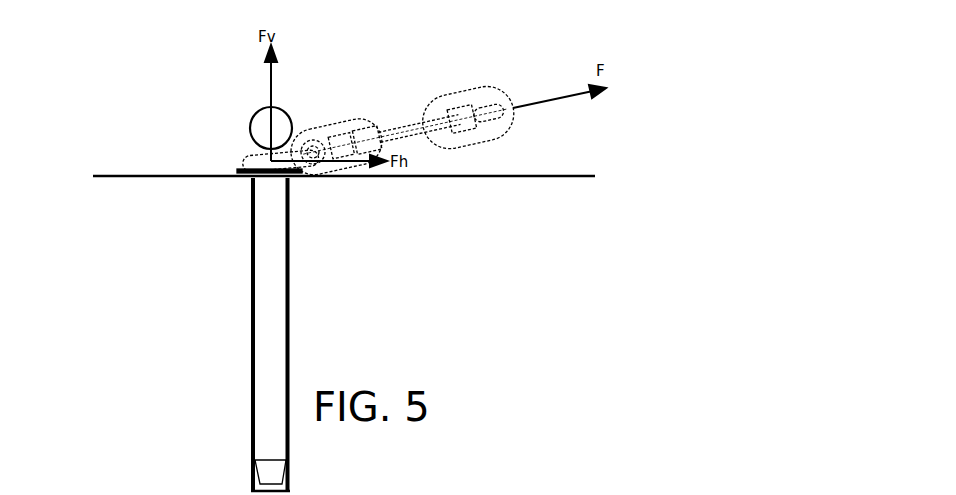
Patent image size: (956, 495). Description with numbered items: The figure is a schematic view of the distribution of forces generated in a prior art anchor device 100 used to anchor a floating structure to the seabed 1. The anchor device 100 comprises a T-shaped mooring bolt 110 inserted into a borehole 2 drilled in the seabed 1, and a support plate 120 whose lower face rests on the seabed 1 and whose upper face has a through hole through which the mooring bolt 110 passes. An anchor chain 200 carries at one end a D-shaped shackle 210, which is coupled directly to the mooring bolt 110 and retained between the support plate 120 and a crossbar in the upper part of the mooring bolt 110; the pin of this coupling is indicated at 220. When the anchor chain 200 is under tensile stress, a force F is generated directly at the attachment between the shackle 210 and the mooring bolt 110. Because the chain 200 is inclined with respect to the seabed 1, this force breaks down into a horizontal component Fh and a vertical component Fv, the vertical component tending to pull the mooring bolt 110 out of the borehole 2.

The seabed 1 is at (115, 176).
The borehole 2 is at (238, 388).
The anchor device 100 is at (261, 296).
The mooring bolt 110 is at (262, 282).
The support plate 120 is at (235, 170).
The anchor chain 200 is at (327, 100).
The D-shaped shackle 210 is at (247, 157).
The pivot pin 220 is at (314, 149).